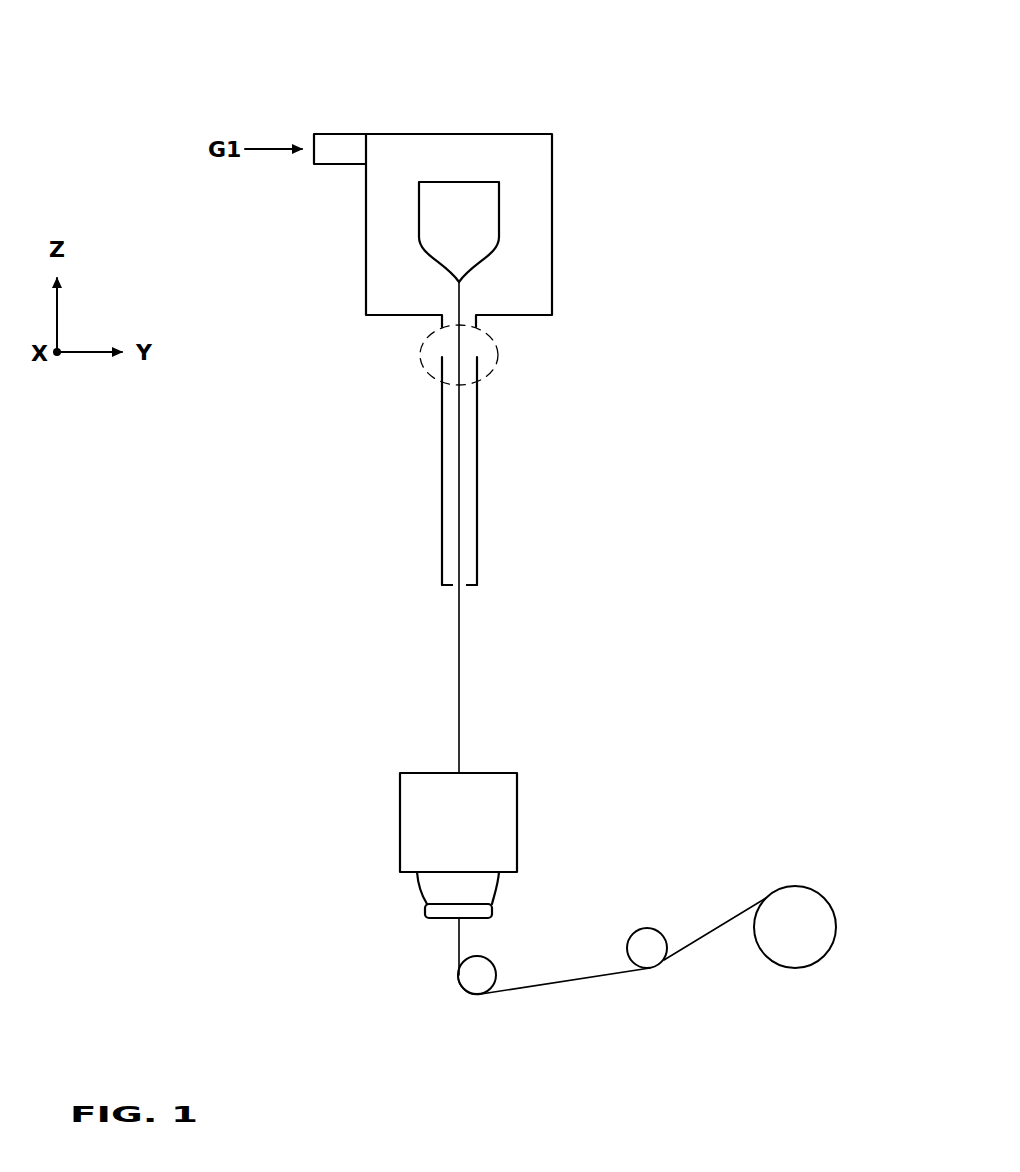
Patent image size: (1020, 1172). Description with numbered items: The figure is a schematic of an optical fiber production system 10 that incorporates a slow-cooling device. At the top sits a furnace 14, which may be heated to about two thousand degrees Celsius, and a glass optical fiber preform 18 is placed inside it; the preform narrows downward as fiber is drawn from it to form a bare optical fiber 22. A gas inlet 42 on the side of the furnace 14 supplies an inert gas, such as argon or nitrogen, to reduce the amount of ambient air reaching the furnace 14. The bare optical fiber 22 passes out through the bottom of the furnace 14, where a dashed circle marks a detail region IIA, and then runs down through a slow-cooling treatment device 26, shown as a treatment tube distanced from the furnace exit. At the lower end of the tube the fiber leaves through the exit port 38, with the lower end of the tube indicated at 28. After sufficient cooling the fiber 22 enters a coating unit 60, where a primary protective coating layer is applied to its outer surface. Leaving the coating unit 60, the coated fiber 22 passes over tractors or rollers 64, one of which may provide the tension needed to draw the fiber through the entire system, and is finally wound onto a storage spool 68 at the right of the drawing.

The optical fiber production system 10 is at (630, 164).
The furnace 14 is at (528, 134).
The glass optical fiber preform 18 is at (499, 205).
The bare optical fiber 22 is at (458, 425).
The slow-cooling treatment device 26 is at (428, 382).
The tube exit opening 28 is at (425, 582).
The exit port 38 is at (455, 588).
The gas inlet 42 is at (313, 138).
The coating unit 60 is at (503, 773).
The rollers 64 is at (628, 940).
The take-up spool 68 is at (837, 915).
The detail region IIA is at (498, 358).